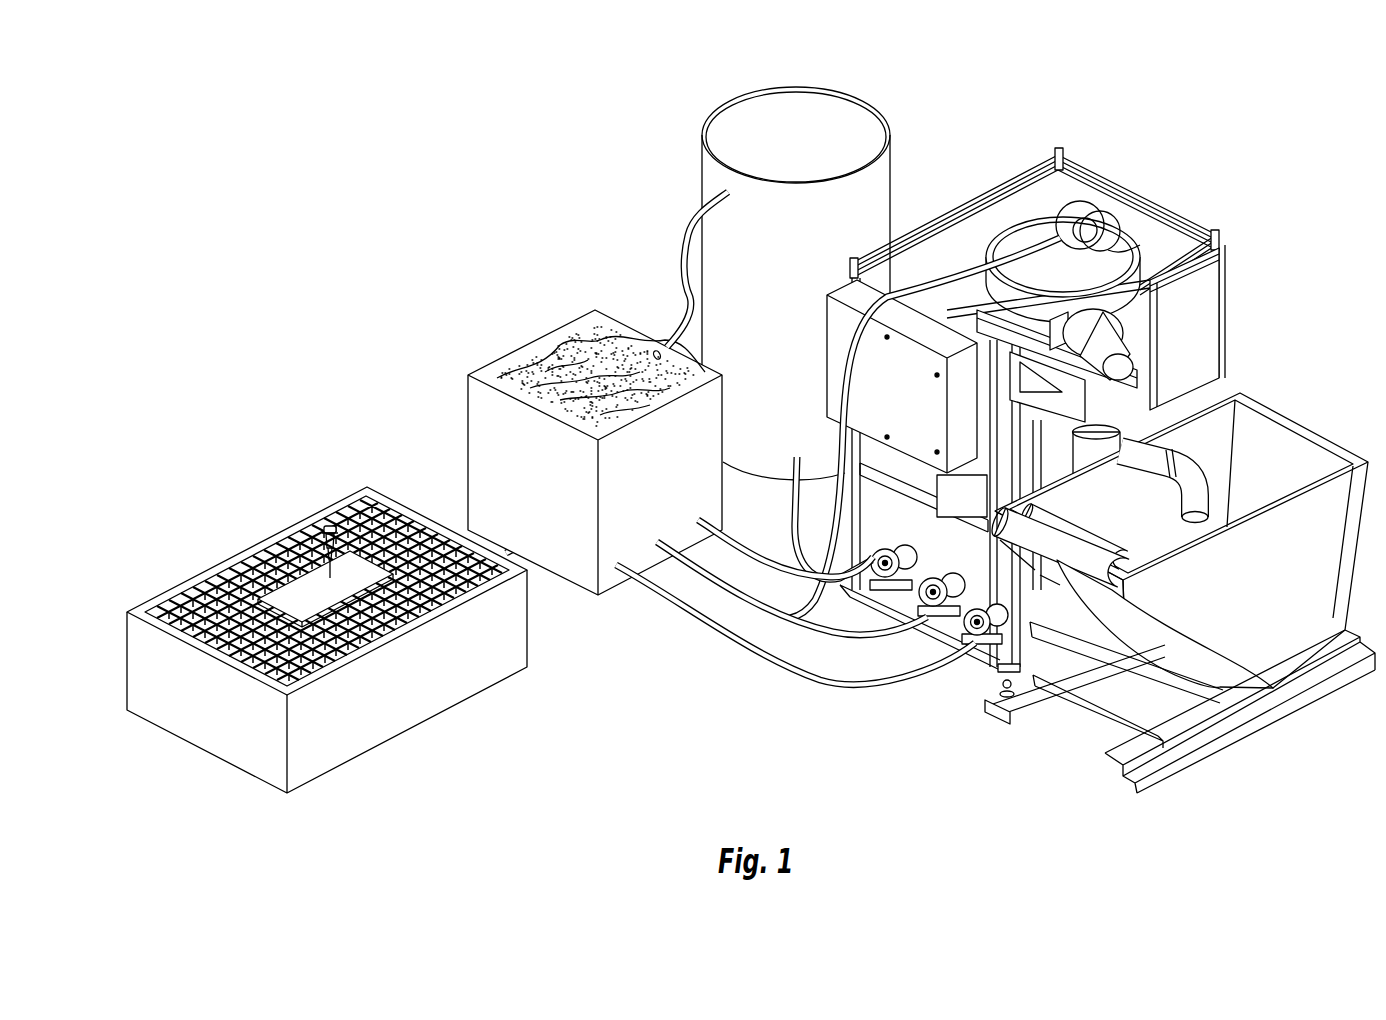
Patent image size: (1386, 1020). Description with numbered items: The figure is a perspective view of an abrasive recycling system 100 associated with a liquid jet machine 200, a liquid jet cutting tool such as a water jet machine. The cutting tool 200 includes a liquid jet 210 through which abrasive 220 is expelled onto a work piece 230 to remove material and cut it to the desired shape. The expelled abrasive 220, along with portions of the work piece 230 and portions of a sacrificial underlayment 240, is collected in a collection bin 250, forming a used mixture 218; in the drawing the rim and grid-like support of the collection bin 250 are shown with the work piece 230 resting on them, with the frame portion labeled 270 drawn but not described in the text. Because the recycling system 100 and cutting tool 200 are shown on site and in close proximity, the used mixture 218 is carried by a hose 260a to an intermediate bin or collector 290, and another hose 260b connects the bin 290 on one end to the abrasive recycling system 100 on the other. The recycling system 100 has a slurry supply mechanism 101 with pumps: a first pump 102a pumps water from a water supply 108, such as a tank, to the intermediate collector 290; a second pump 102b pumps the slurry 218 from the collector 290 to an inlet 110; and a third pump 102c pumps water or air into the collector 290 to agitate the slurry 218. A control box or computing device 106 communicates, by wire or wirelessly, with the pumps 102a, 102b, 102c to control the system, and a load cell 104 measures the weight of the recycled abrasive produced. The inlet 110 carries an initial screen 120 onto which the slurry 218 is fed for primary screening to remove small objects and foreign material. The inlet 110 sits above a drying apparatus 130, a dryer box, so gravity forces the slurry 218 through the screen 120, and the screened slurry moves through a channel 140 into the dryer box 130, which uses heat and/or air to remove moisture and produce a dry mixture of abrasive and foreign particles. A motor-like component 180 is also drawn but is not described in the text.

The abrasive recycling system 100 is at (1199, 114).
The slurry supply mechanism 101 is at (797, 750).
The first pump 102a is at (863, 595).
The second pump 102b is at (935, 600).
The third pump 102c is at (975, 640).
The load cell 104 is at (1057, 618).
The control box or computing device 106 is at (890, 353).
The water supply 108 is at (890, 172).
The inlet 110 is at (1080, 217).
The initial screen 120 is at (1122, 262).
The drying apparatus 130 is at (1153, 373).
The channel 140 is at (1153, 278).
The motor 180 is at (1110, 332).
The liquid jet machine 200 is at (240, 343).
The liquid jet 210 is at (337, 540).
The used mixture 218 is at (598, 365).
The abrasive 220 is at (325, 580).
The work piece 230 is at (292, 590).
The sacrificial underlayment 240 is at (258, 593).
The collection bin 250 is at (428, 690).
The hose 260a is at (513, 553).
The hose 260b is at (697, 580).
The build tray rim 270 is at (397, 502).
The intermediate bin or collector 290 is at (522, 350).